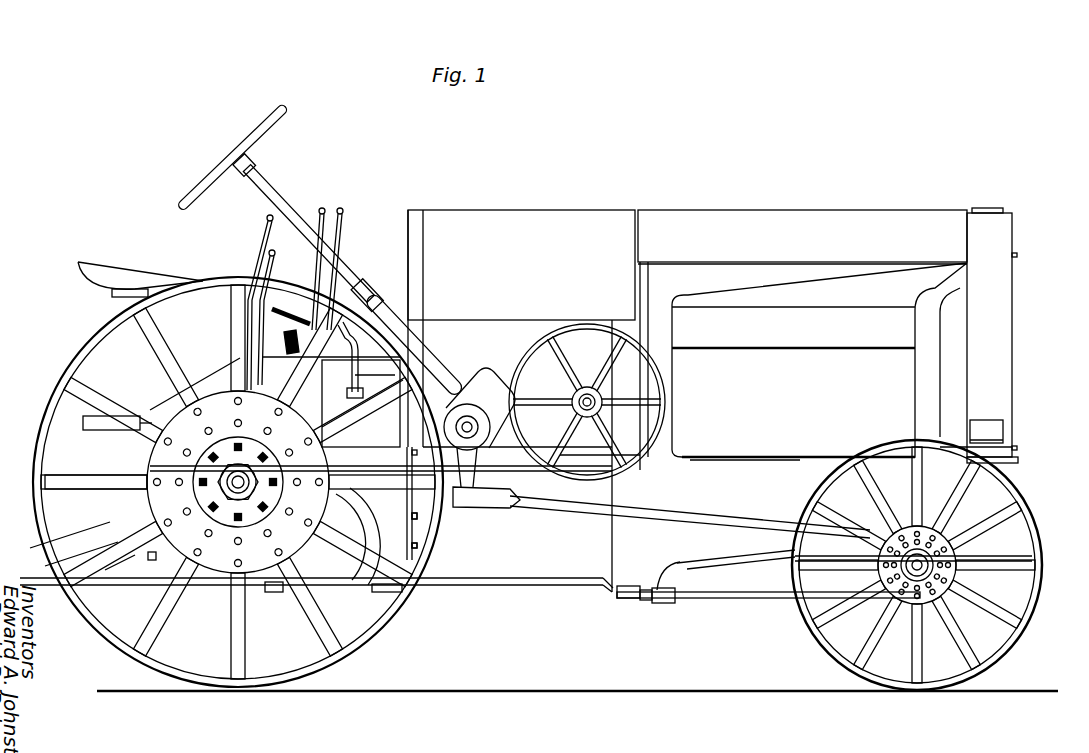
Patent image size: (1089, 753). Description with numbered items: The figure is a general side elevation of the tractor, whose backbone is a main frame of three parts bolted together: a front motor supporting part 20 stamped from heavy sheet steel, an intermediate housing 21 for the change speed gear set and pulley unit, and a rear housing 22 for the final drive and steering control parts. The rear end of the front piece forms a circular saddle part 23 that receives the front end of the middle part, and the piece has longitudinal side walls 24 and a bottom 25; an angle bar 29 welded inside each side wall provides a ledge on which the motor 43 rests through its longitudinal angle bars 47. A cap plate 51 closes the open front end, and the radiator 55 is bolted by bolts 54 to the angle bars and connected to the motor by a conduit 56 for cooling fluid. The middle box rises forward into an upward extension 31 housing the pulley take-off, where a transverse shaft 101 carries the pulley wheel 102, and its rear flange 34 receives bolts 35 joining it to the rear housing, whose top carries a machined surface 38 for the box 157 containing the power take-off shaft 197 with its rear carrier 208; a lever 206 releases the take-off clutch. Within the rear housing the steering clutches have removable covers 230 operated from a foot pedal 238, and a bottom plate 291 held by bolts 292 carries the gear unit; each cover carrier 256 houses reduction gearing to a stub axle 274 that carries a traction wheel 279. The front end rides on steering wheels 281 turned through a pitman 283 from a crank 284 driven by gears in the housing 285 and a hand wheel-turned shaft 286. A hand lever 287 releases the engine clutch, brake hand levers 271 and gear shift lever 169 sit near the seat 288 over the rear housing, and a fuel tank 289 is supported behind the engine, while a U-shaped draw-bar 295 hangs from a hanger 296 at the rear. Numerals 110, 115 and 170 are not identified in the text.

The front motor supporting part 20 is at (678, 555).
The intermediate housing 21 is at (555, 580).
The rear housing 22 is at (397, 588).
The saddle part 23 is at (616, 587).
The side walls 24 is at (787, 480).
The bottom 25 is at (760, 565).
The angle bar 29 is at (727, 457).
The upward extension 31 is at (580, 443).
The flange 34 is at (417, 548).
The bolts 35 is at (417, 517).
The machined surface 38 is at (112, 482).
The motor 43 is at (790, 338).
The angle bars 47 is at (825, 457).
The cap plate 51 is at (1012, 466).
The bolts 54 is at (990, 443).
The radiator 55 is at (1000, 316).
The conduit 56 is at (943, 273).
The transverse shaft 101 is at (590, 386).
The pulley wheel 102 is at (610, 325).
The housing 110 is at (485, 380).
The pipe 115 is at (353, 370).
The box 157 is at (367, 363).
The gear shift lever 169 is at (267, 222).
The pedal 170 is at (392, 443).
The power take-off shaft 197 is at (103, 430).
The lever 206 is at (322, 207).
The carrier 208 is at (135, 410).
The removable covers 230 is at (363, 623).
The foot pedal 238 is at (290, 353).
The cover carrier 256 is at (153, 555).
The brake hand lever 271 is at (267, 255).
The stub axle 274 is at (256, 484).
The traction wheel 279 is at (360, 648).
The steering wheels 281 is at (1003, 650).
The pitman 283 is at (597, 513).
The crank 284 is at (467, 470).
The housing 285 is at (480, 388).
The hand wheel-turned shaft 286 is at (262, 165).
The hand lever 287 is at (343, 210).
The seat 288 is at (87, 258).
The fuel tank 289 is at (485, 218).
The bottom plate 291 is at (380, 600).
The bolts 292 is at (272, 585).
The draw-bar 295 is at (113, 562).
The hanger 296 is at (55, 515).